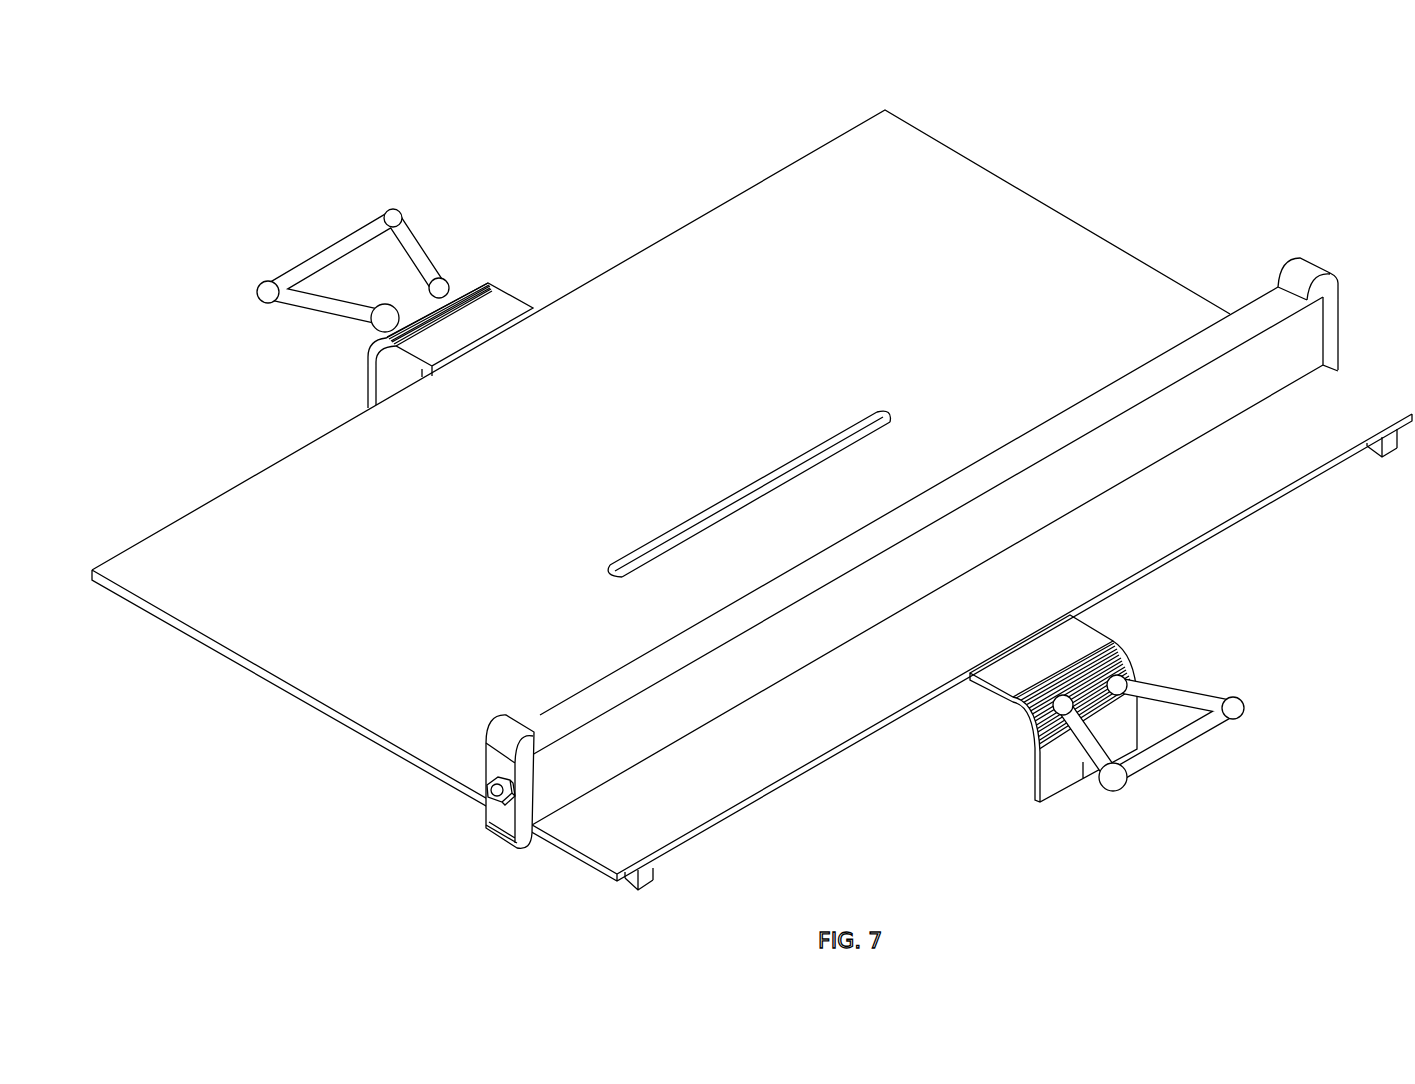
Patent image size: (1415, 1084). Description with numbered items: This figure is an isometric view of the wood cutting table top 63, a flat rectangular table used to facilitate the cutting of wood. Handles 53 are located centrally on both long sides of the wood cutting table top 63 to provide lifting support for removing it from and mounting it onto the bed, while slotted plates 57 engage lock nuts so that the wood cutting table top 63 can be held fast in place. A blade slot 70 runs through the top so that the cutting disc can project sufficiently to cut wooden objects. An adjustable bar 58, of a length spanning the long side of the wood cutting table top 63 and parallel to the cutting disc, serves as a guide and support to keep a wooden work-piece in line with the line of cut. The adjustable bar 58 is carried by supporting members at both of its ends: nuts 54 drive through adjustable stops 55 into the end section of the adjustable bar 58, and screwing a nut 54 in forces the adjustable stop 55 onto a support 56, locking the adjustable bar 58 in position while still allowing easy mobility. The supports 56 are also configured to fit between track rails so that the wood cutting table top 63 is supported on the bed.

The wood cutting table top 63 is at (554, 140).
The handles 53 is at (318, 258).
The nuts 54 is at (488, 796).
The adjustable stops 55 is at (503, 838).
The supports 56 is at (657, 875).
The slotted plates 57 is at (362, 382).
The adjustable bar 58 is at (583, 700).
The blade slot 70 is at (800, 462).